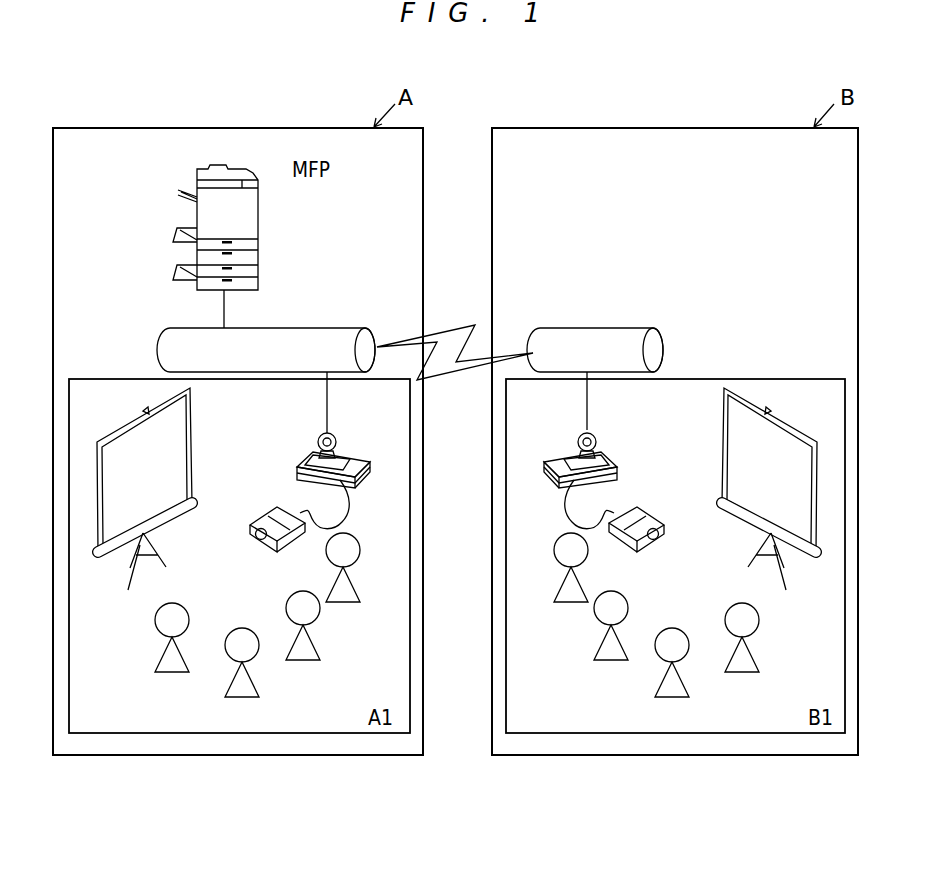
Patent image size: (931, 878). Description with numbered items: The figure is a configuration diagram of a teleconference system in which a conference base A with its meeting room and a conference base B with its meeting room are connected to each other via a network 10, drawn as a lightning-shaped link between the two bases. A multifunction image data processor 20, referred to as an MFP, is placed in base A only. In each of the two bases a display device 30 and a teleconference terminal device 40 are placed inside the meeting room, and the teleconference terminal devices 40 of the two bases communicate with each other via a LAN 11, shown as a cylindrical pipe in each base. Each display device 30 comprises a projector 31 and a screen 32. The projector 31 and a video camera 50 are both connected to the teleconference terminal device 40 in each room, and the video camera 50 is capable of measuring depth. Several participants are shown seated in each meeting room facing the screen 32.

The network 10 is at (448, 328).
The LAN 11 is at (318, 328).
The multifunction image data processor 20 is at (258, 210).
The display device 30 is at (206, 449).
The projector 31 is at (259, 517).
The screen 32 is at (128, 447).
The teleconference terminal device 40 is at (358, 461).
The video camera 50 is at (320, 436).